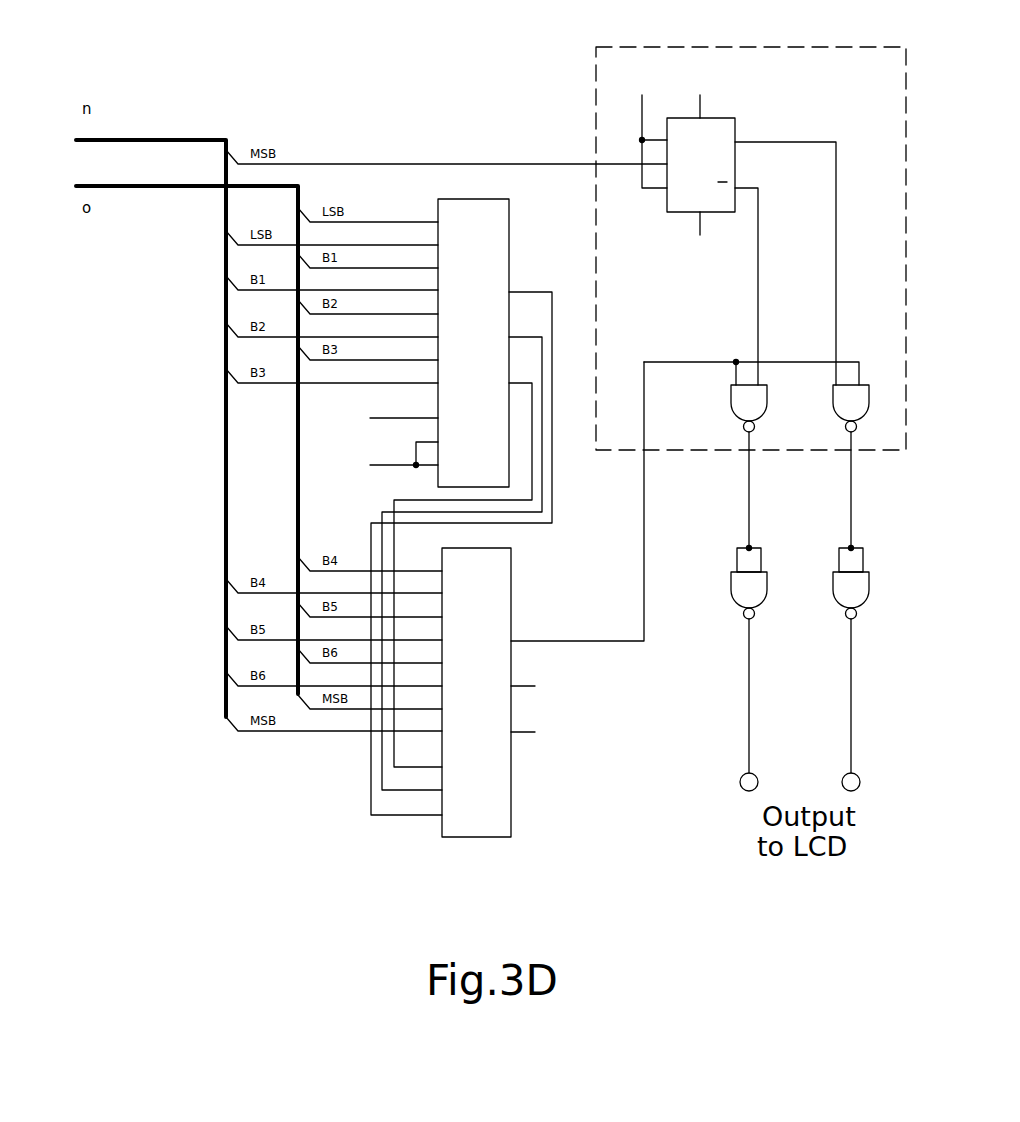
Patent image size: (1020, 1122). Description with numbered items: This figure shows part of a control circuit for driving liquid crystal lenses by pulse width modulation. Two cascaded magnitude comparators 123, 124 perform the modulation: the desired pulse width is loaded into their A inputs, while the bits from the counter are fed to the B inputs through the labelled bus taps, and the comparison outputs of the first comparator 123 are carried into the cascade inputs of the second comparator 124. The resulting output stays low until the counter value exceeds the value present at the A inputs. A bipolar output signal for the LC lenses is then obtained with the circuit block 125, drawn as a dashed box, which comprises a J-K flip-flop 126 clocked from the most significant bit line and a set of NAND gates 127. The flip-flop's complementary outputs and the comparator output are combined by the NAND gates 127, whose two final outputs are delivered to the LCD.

The magnitude comparator 123 is at (503, 228).
The magnitude comparator 124 is at (505, 585).
The circuit block 125 is at (795, 48).
The J-K flip-flop 126 is at (706, 121).
The NAND gates 127 is at (841, 408).